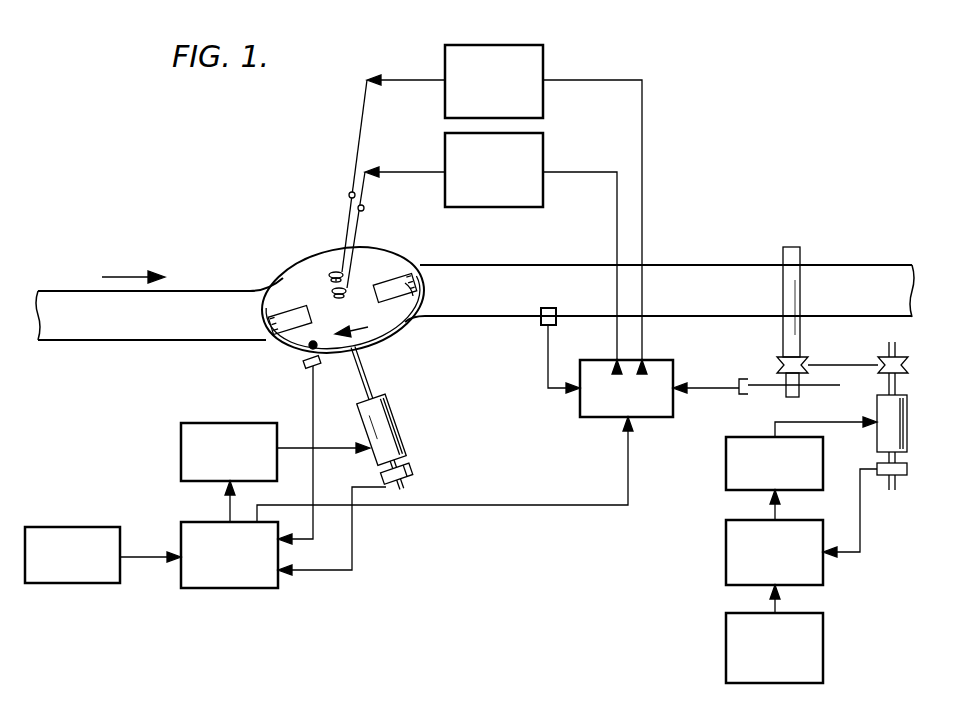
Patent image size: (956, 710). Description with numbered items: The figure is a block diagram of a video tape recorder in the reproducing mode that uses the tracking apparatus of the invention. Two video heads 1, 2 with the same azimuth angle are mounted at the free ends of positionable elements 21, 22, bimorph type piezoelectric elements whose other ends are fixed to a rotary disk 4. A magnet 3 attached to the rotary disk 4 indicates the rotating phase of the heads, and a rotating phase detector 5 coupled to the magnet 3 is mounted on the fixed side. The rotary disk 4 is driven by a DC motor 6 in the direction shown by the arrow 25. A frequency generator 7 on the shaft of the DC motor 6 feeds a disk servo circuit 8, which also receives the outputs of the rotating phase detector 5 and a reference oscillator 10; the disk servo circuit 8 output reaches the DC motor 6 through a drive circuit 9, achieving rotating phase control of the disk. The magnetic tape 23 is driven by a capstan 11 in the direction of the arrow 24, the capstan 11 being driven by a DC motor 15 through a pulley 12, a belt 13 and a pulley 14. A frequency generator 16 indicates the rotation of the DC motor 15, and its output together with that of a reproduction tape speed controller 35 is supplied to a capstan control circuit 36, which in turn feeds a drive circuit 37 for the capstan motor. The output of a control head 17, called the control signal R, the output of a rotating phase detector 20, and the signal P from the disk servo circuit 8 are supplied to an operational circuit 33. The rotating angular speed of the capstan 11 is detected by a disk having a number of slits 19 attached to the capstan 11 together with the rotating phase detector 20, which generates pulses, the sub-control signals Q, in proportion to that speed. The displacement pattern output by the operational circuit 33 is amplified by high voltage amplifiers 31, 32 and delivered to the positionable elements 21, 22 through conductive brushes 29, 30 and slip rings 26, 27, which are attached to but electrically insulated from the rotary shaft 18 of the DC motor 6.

The video head 1 is at (270, 338).
The video head 2 is at (418, 272).
The magnet 3 is at (308, 348).
The rotary disk 4 is at (383, 258).
The rotating phase detector 5 is at (319, 367).
The DC motor 6 is at (399, 426).
The frequency generator 7 is at (412, 470).
The disk servo circuit 8 is at (234, 588).
The drive circuit 9 is at (181, 456).
The reference oscillator 10 is at (78, 527).
The capstan 11 is at (798, 248).
The pulley 12 is at (805, 358).
The belt 13 is at (845, 365).
The pulley 14 is at (890, 345).
The DC motor 15 is at (877, 440).
The frequency generator 16 is at (886, 477).
The control head 17 is at (545, 326).
The rotary shaft 18 is at (371, 377).
The disk having a number of slits 19 is at (764, 388).
The rotating phase detector 20 is at (738, 393).
The positionable element 21 is at (278, 285).
The positionable element 22 is at (415, 290).
The magnetic tape 23 is at (868, 265).
The arrow 24 is at (130, 272).
The arrow 25 is at (374, 328).
The slip ring 26 is at (331, 296).
The slip ring 27 is at (327, 262).
The conductive brush 29 is at (355, 222).
The conductive brush 30 is at (349, 194).
The high voltage amplifier 31 is at (543, 143).
The high voltage amplifier 32 is at (543, 56).
The operational circuit 33 is at (600, 417).
The reproduction tape speed controller 35 is at (726, 648).
The capstan control circuit 36 is at (726, 560).
The capstan drive circuit 37 is at (726, 478).